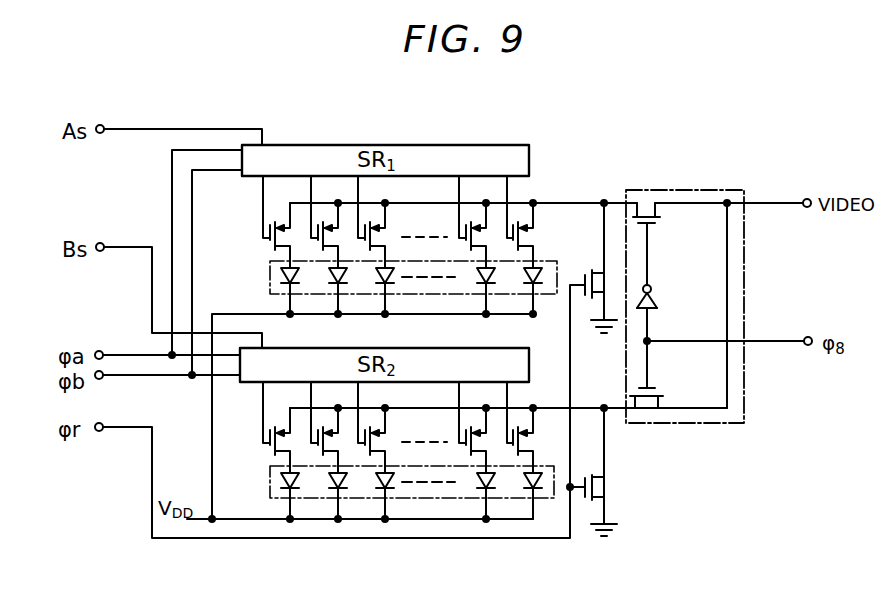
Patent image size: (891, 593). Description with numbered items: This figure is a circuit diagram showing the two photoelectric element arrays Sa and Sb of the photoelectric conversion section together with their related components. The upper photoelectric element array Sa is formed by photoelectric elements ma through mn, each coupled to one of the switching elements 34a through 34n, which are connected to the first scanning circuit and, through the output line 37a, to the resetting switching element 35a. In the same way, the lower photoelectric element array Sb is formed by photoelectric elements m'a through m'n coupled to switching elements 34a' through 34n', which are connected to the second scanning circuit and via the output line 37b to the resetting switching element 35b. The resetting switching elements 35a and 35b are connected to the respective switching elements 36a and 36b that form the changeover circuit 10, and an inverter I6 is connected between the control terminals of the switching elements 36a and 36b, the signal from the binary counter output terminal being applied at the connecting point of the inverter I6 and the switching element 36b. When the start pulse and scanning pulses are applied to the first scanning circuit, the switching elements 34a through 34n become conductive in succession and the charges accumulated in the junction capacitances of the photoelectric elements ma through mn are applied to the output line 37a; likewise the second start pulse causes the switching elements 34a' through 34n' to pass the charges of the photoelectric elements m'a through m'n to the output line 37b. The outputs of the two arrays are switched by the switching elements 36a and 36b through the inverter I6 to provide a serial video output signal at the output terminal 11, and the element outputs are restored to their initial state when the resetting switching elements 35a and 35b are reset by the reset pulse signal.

The switching element 34a is at (255, 222).
The photoelectric element ma is at (282, 274).
The photoelectric element array Sa is at (268, 276).
The switching element 34n is at (542, 217).
The photoelectric element mn is at (534, 268).
The output line 37a is at (594, 202).
The switching element 36a is at (647, 212).
The changeover circuit 10 is at (715, 189).
The output terminal 11 is at (807, 198).
The resetting switching element 35a is at (600, 283).
The inverter I6 is at (656, 302).
The switching element 36b is at (657, 390).
The output line 37b is at (588, 407).
The switching element 34a' is at (255, 427).
The photoelectric element m'a is at (260, 492).
The photoelectric element array Sb is at (270, 488).
The switching element 34n' is at (583, 427).
The photoelectric element m'n is at (549, 520).
The resetting switching element 35b is at (606, 490).